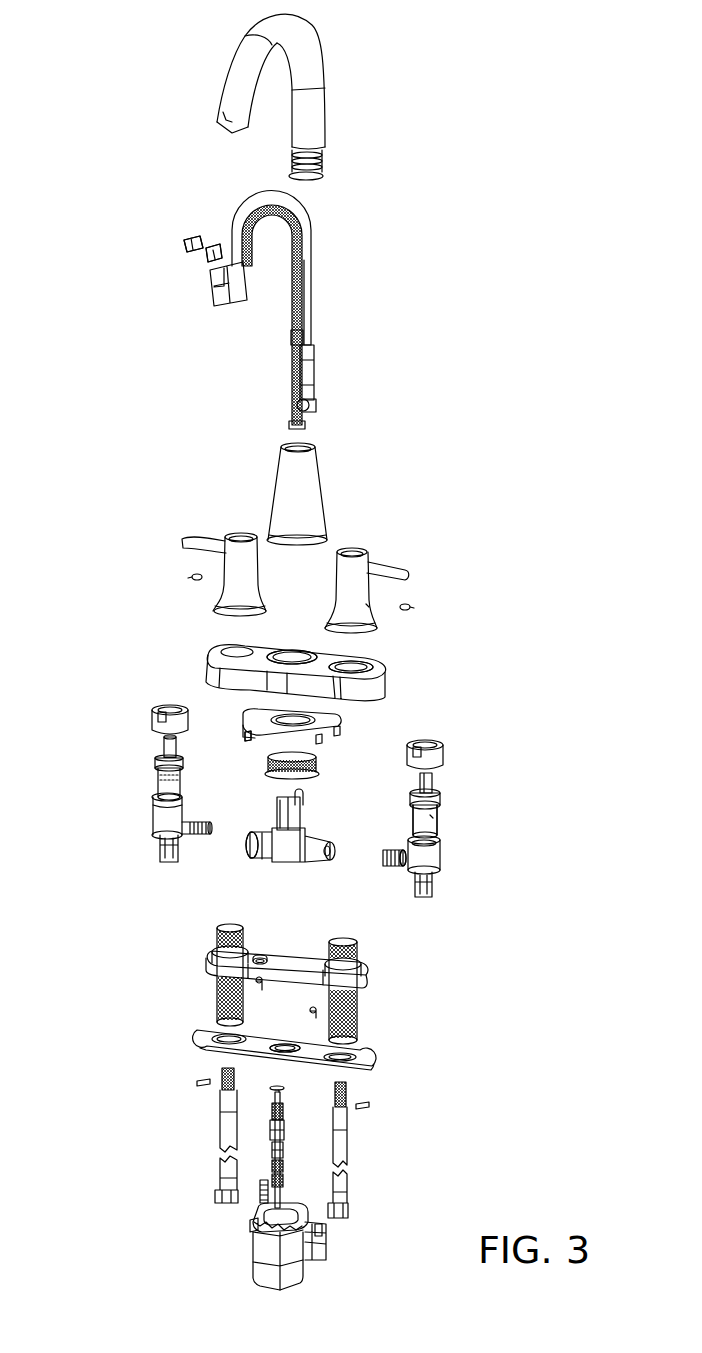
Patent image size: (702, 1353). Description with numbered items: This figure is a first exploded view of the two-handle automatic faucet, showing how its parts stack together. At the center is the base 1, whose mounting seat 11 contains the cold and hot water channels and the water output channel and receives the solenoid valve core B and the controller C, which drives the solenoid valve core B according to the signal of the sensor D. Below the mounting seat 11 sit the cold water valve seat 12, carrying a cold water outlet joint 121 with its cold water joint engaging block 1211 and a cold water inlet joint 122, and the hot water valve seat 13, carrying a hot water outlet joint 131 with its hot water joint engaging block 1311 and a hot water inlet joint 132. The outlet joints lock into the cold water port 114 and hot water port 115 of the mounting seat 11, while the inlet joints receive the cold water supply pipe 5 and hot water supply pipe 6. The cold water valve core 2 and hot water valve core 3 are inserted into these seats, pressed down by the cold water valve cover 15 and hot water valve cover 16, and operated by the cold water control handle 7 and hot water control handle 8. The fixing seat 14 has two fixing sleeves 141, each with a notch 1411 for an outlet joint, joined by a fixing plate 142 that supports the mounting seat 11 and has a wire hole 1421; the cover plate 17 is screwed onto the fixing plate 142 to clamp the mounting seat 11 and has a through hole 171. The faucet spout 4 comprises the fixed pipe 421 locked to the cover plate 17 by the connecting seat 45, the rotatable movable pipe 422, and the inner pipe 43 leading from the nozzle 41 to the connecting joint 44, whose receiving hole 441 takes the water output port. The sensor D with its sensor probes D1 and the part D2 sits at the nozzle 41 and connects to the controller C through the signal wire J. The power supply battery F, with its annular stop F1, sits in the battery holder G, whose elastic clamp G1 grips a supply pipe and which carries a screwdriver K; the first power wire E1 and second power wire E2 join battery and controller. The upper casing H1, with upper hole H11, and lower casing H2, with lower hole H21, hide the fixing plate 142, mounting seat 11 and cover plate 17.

The base 1 is at (482, 607).
The mounting seat 11 is at (440, 795).
The cold water valve seat 12 is at (430, 855).
The cold water outlet joint 121 is at (387, 857).
The cold water joint engaging block 1211 is at (395, 866).
The cold water inlet joint 122 is at (417, 897).
The hot water valve seat 13 is at (318, 758).
The hot water outlet joint 131 is at (157, 819).
The hot water joint engaging block 1311 is at (157, 840).
The hot water inlet joint 132 is at (157, 858).
The cold water port 114 is at (322, 858).
The hot water port 115 is at (252, 845).
The fixing seat 14 is at (521, 953).
The fixing sleeves 141 is at (345, 970).
The notch 1411 is at (212, 947).
The fixing plate 142 is at (263, 977).
The wire hole 1421 is at (297, 967).
The cold water valve cover 15 is at (442, 750).
The hot water valve cover 16 is at (372, 670).
The cover plate 17 is at (338, 720).
The through hole 171 is at (263, 720).
The cold water valve core 2 is at (415, 820).
The hot water valve core 3 is at (158, 768).
The faucet spout 4 is at (413, 85).
The nozzle 41 is at (292, 255).
The fixed pipe 421 is at (312, 488).
The movable pipe 422 is at (313, 120).
The inner pipe 43 is at (310, 287).
The connecting joint 44 is at (313, 367).
The receiving hole 441 is at (313, 407).
The connecting seat 45 is at (317, 768).
The cold water supply pipe 5 is at (338, 1152).
The hot water supply pipe 6 is at (222, 1135).
The cold water control handle 7 is at (348, 582).
The hot water control handle 8 is at (235, 580).
The solenoid valve core B is at (277, 815).
The controller C is at (293, 858).
The sensor D is at (214, 248).
The sensor probes D1 is at (203, 253).
The clip D2 is at (212, 260).
The first power wire E1 is at (282, 1100).
The second power wire E2 is at (283, 1180).
The power supply battery F is at (263, 1270).
The annular stop F1 is at (257, 1225).
The battery holder G is at (307, 1257).
The elastic clamp G1 is at (322, 1228).
The upper casing H1 is at (210, 670).
The upper hole H11 is at (292, 655).
The lower casing H2 is at (200, 1050).
The lower hole H21 is at (276, 1047).
The signal wire J is at (293, 337).
The screwdriver K is at (260, 1196).